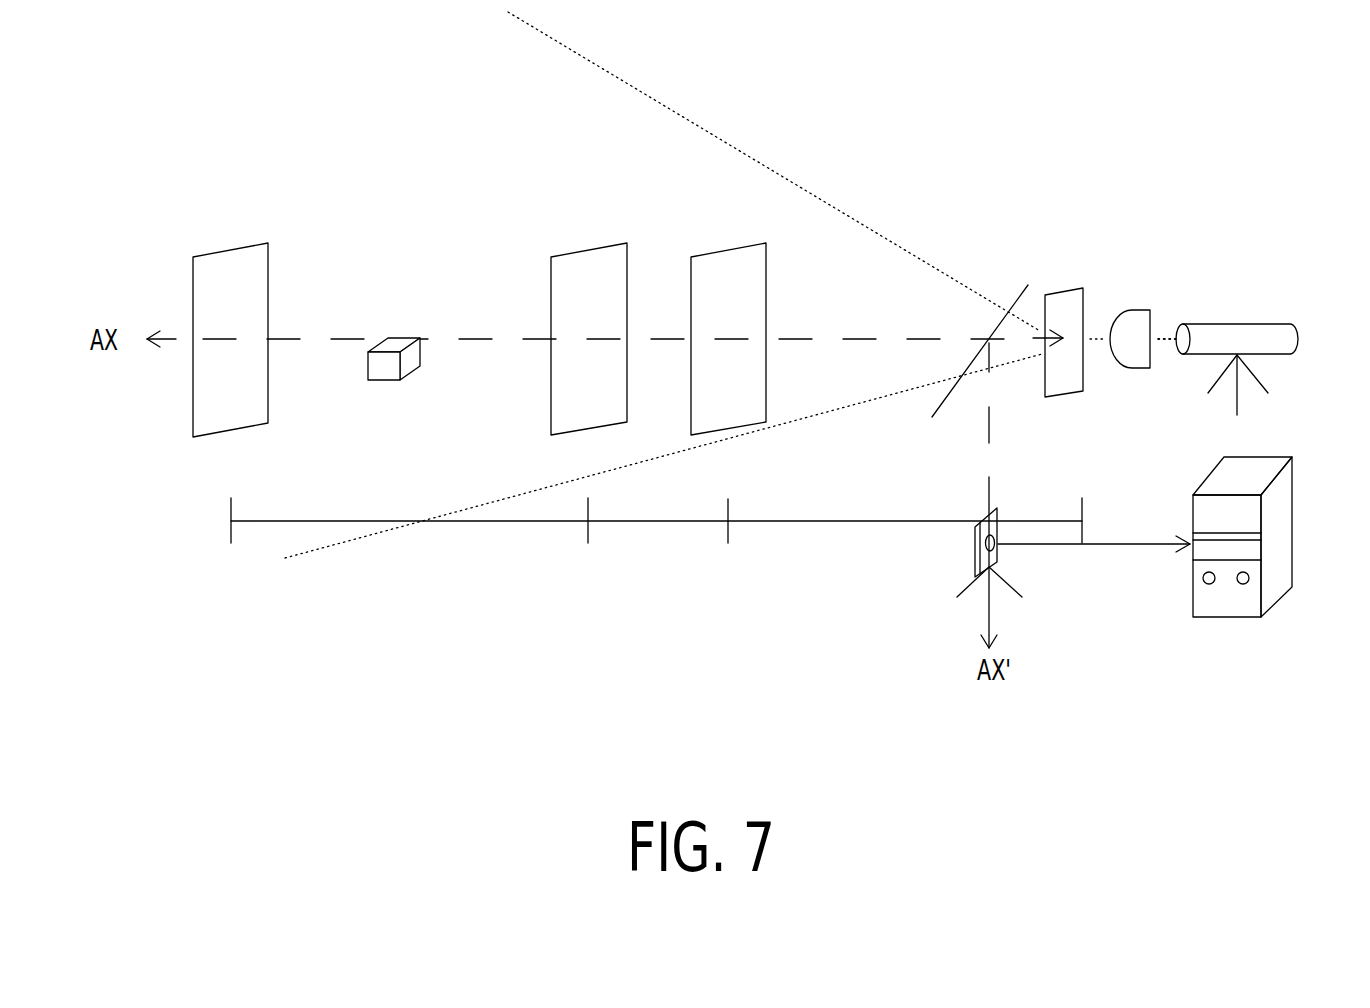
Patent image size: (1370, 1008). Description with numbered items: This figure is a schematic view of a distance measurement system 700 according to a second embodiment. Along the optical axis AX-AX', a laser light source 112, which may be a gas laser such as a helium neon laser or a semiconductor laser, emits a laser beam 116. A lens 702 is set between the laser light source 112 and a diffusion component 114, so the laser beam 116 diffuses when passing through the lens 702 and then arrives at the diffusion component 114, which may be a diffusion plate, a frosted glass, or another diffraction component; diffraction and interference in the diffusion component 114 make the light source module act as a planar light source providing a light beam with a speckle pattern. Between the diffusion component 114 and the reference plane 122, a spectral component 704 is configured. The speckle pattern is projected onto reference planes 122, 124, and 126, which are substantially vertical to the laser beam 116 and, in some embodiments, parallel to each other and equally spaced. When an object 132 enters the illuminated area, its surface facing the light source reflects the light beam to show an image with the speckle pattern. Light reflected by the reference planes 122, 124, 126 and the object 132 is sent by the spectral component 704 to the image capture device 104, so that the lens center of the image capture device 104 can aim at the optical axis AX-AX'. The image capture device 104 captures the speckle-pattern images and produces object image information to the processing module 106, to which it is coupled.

The distance measurement system 700 is at (148, 135).
The reference plane 126 is at (235, 245).
The reference plane 124 is at (590, 243).
The reference plane 122 is at (730, 243).
The object 132 is at (386, 383).
The spectral component 704 is at (1015, 292).
The diffusion component 114 is at (1065, 288).
The lens 702 is at (1137, 310).
The laser beam 116 is at (1160, 338).
The laser light source 112 is at (1262, 324).
The image capture device 104 is at (1015, 502).
The processing module 106 is at (1291, 528).